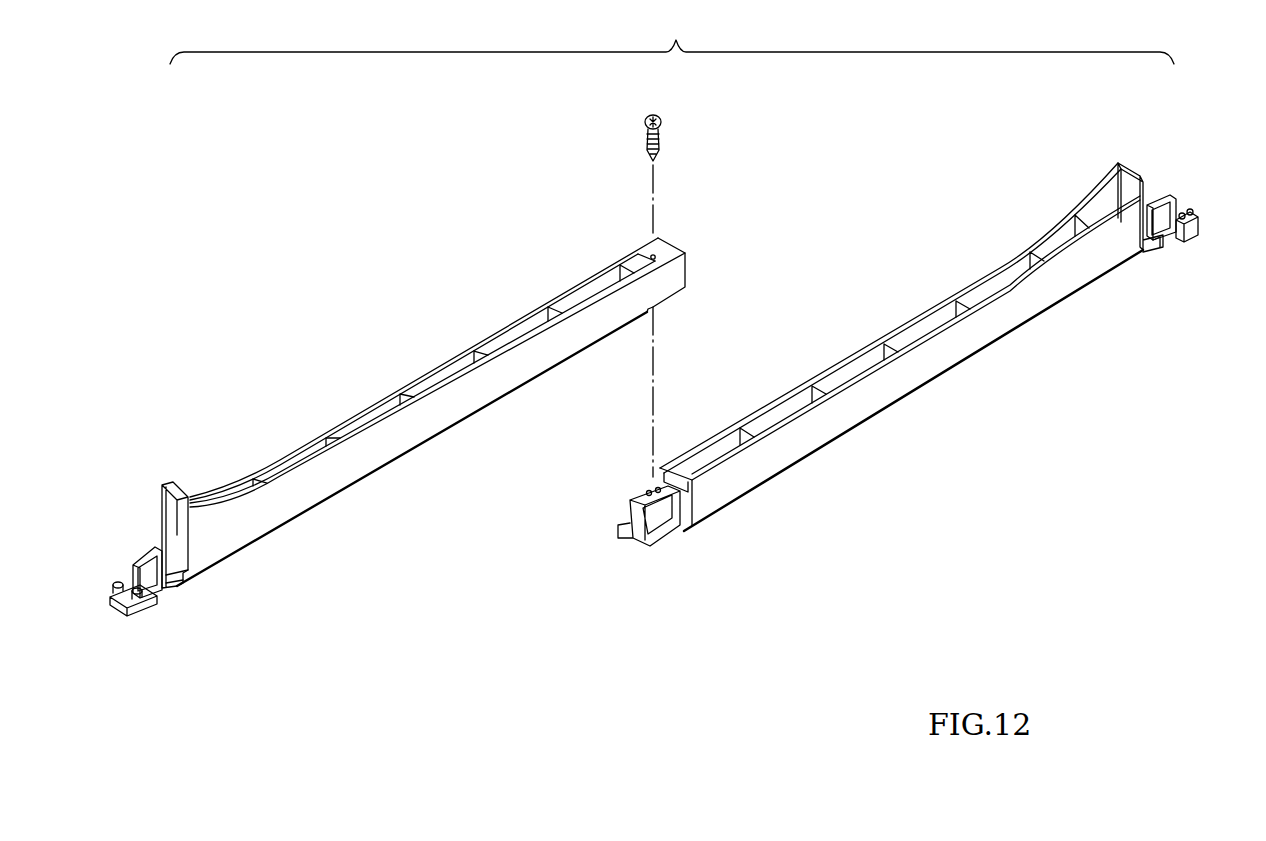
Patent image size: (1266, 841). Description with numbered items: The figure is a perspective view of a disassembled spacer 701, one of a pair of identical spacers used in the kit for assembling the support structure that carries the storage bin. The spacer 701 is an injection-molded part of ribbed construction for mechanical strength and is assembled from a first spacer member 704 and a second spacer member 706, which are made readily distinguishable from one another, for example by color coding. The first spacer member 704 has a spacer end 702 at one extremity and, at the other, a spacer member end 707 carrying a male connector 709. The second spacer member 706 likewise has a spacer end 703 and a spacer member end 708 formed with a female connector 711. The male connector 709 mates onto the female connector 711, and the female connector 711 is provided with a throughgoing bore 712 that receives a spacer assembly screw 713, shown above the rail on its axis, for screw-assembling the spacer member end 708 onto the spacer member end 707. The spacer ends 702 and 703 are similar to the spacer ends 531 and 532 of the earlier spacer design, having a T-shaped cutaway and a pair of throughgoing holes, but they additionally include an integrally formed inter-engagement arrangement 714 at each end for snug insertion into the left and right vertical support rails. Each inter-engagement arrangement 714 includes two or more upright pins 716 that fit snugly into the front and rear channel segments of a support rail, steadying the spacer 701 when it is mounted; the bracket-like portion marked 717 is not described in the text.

The spacer 701 is at (672, 34).
The spacer end 702 is at (1182, 180).
The spacer end 703 is at (98, 550).
The first spacer member 704 is at (835, 381).
The second spacer member 706 is at (476, 388).
The spacer member end 707 is at (644, 542).
The spacer member end 708 is at (650, 251).
The male connector 709 is at (682, 530).
The female connector 711 is at (711, 255).
The throughgoing bore 712 is at (658, 258).
The spacer assembly screw 713 is at (662, 119).
The inter-engagement arrangement 714 is at (664, 373).
The upright pin 716 is at (1199, 220).
The mounting bracket 717 is at (1158, 198).
The spacer end 531 is at (1190, 257).
The spacer end 532 is at (178, 602).